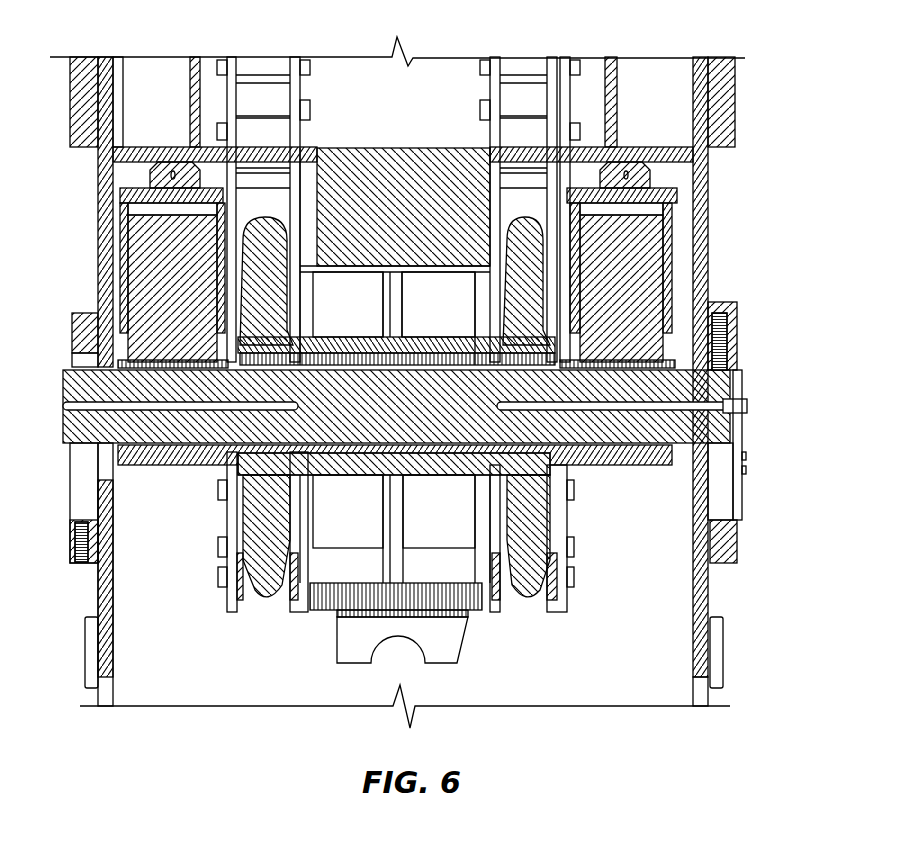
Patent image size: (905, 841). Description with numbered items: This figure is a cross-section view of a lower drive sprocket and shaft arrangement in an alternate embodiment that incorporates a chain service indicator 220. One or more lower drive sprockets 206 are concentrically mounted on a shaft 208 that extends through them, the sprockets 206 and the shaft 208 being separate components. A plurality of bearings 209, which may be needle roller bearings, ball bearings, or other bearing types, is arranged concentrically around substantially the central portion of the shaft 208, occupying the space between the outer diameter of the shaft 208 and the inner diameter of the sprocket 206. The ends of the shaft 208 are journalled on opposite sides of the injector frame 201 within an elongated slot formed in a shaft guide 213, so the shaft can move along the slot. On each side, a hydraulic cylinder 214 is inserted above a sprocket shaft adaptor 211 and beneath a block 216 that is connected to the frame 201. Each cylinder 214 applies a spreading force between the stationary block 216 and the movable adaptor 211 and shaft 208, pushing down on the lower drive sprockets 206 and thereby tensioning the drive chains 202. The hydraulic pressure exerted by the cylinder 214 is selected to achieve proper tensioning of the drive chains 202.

The injector frame 201 is at (705, 183).
The drive chains 202 is at (265, 67).
The lower drive sprocket 206 is at (258, 600).
The shaft 208 is at (710, 390).
The bearings 209 is at (363, 350).
The sprocket shaft adaptor 211 is at (612, 467).
The shaft guide 213 is at (722, 490).
The hydraulic cylinder 214 is at (148, 282).
The block 216 is at (670, 147).
The chain service indicator 220 is at (742, 442).